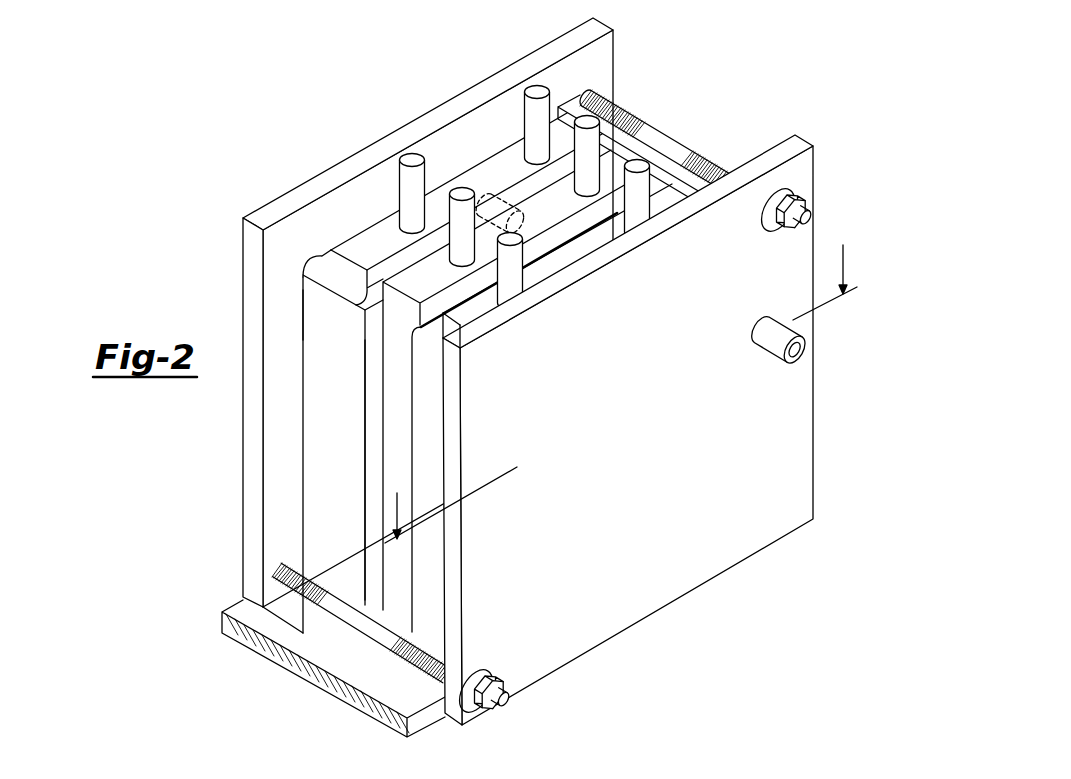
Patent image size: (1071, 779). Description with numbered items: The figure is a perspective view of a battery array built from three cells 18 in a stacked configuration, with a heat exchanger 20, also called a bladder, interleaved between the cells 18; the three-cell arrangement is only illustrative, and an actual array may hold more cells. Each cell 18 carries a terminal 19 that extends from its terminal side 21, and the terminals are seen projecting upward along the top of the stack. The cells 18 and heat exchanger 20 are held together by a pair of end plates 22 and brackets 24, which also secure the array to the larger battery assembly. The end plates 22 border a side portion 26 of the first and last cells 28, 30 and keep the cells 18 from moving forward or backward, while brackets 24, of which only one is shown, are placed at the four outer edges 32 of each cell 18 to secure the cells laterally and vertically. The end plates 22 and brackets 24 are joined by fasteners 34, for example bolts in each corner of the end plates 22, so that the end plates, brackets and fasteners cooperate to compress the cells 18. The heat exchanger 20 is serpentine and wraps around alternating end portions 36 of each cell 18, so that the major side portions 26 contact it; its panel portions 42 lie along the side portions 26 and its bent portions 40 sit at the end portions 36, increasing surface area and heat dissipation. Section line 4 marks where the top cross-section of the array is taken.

The cells 18 is at (612, 233).
The terminal 19 is at (534, 118).
The heat exchanger 20 is at (347, 370).
The terminal side 21 is at (554, 140).
The end plates 22 is at (537, 63).
The brackets 24 is at (660, 132).
The side portion 26 is at (368, 223).
The first cell 28 is at (383, 254).
The last cell 30 is at (468, 312).
The outer edges 32 is at (398, 292).
The fasteners 34 is at (804, 196).
The end portions 36 is at (300, 272).
The bent portions 40 is at (328, 437).
The panel portions 42 is at (317, 257).
The section line 4- 4 is at (621, 379).